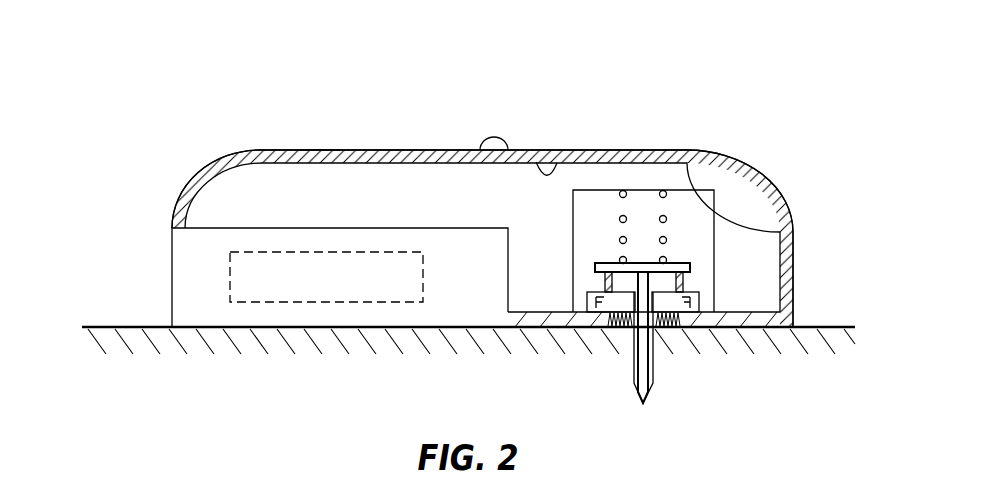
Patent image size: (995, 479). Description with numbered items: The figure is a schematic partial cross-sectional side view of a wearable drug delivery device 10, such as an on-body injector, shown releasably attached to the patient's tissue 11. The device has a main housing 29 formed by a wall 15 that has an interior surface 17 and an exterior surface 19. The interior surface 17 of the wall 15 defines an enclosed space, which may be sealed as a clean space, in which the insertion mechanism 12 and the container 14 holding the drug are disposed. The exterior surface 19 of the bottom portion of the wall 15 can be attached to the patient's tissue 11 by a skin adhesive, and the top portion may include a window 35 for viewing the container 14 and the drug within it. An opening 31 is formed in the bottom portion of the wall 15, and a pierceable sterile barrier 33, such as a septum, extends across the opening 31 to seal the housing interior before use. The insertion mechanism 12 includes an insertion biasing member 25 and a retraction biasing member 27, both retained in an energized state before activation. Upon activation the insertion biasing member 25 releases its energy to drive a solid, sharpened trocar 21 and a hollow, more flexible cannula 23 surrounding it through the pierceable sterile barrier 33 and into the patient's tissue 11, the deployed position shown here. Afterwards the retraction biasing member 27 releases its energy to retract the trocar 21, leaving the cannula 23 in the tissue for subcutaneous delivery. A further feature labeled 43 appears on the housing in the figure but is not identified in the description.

The drug delivery device 10 is at (115, 82).
The patient's tissue 11 is at (110, 325).
The insertion mechanism 12 is at (724, 280).
The container 14 is at (229, 270).
The wall 15 is at (633, 151).
The interior surface 17 is at (539, 168).
The exterior surface 19 is at (583, 151).
The trocar 21 is at (649, 397).
The cannula 23 is at (633, 381).
The insertion biasing member 25 is at (618, 237).
The retraction biasing member 27 is at (683, 283).
The main housing 29 is at (720, 149).
The opening 31 is at (613, 341).
The pierceable sterile barrier 33 is at (668, 330).
The window 35 is at (327, 151).
The bump 43 is at (486, 140).